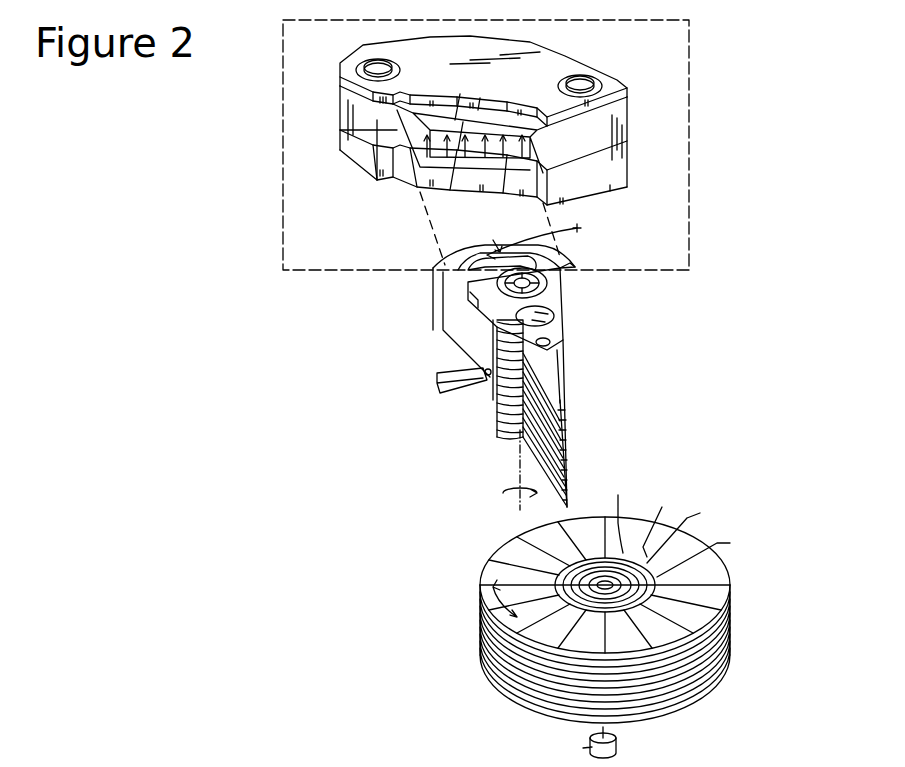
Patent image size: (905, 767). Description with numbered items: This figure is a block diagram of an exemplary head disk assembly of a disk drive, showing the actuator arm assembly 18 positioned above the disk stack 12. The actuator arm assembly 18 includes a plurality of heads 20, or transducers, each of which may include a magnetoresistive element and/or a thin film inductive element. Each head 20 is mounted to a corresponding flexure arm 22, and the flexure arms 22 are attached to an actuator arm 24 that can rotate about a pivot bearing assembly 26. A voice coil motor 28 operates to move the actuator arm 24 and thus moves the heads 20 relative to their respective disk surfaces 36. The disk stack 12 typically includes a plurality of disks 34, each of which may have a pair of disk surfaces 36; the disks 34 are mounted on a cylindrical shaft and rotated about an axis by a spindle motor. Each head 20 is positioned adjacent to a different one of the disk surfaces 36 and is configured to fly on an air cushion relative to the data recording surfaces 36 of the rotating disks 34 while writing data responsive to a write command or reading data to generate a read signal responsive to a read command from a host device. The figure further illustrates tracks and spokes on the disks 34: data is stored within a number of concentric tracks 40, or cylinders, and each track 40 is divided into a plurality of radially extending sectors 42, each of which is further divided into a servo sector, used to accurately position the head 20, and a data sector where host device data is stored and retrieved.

The disk stack 12 is at (486, 538).
The actuator arm assembly 18 is at (676, 337).
The head 20 is at (567, 415).
The flexure arm 22 is at (560, 377).
The actuator arm 24 is at (560, 327).
The pivot bearing assembly 26 is at (537, 285).
The voice coil motor 28 is at (690, 135).
The disk 34 is at (635, 716).
The disk surface 36 is at (715, 595).
The concentric track 40 is at (681, 527).
The radially extending sector 42 is at (480, 613).